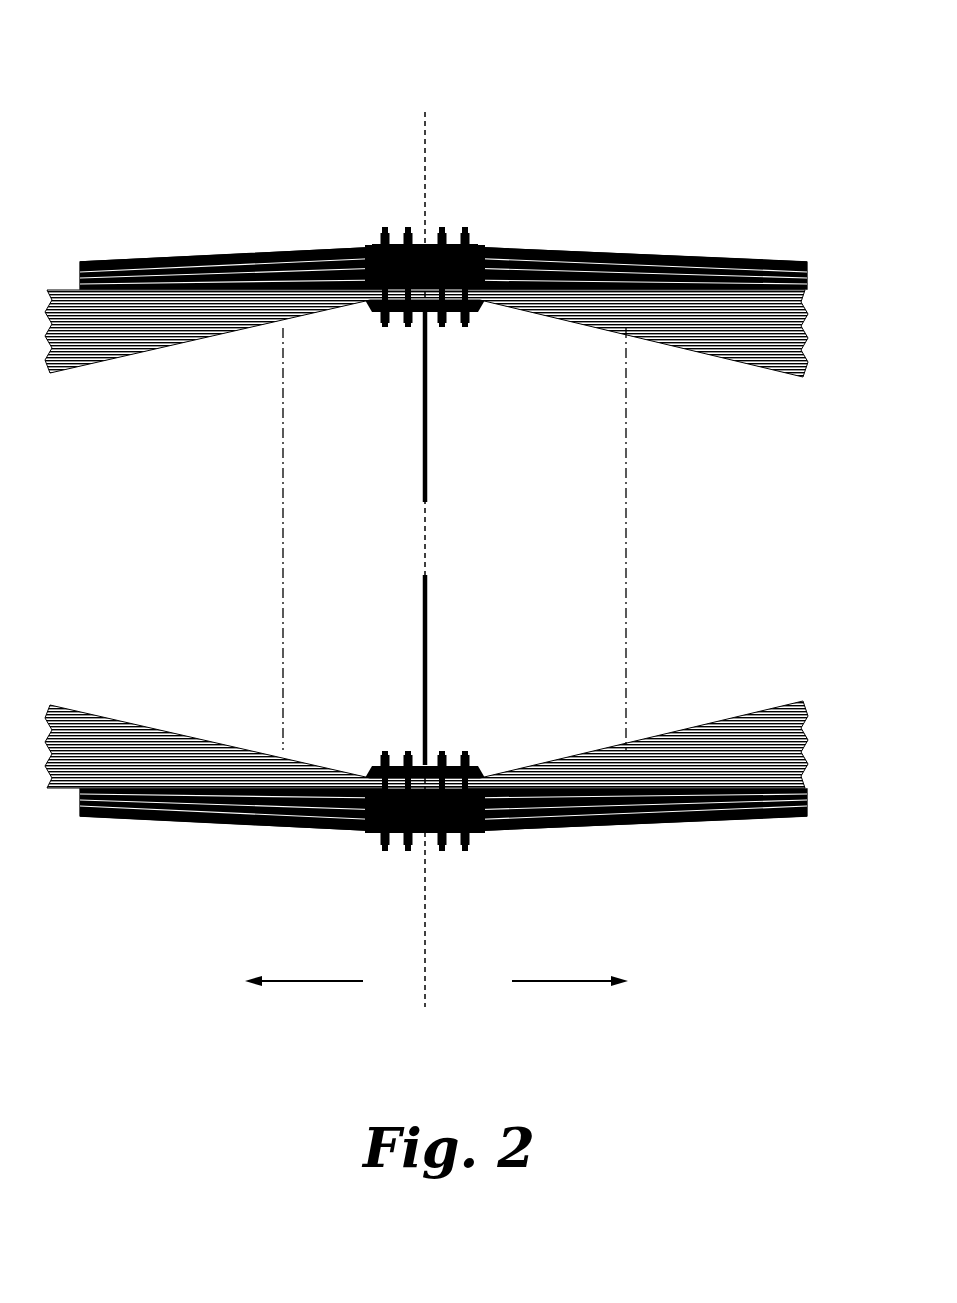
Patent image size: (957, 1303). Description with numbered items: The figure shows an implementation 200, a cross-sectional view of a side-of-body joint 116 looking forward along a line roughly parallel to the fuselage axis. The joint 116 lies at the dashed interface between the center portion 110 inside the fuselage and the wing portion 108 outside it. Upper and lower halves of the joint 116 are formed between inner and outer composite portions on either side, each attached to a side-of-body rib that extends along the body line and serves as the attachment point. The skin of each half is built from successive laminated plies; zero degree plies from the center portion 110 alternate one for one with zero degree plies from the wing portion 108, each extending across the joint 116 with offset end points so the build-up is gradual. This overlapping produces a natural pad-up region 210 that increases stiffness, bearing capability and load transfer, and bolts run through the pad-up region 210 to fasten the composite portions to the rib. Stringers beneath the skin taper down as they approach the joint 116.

The implementation 200 is at (163, 53).
The side-of-body joint 116 is at (418, 168).
The pad-up region 210 is at (505, 249).
The center portion 110 is at (327, 980).
The right wing portion 108 is at (549, 980).